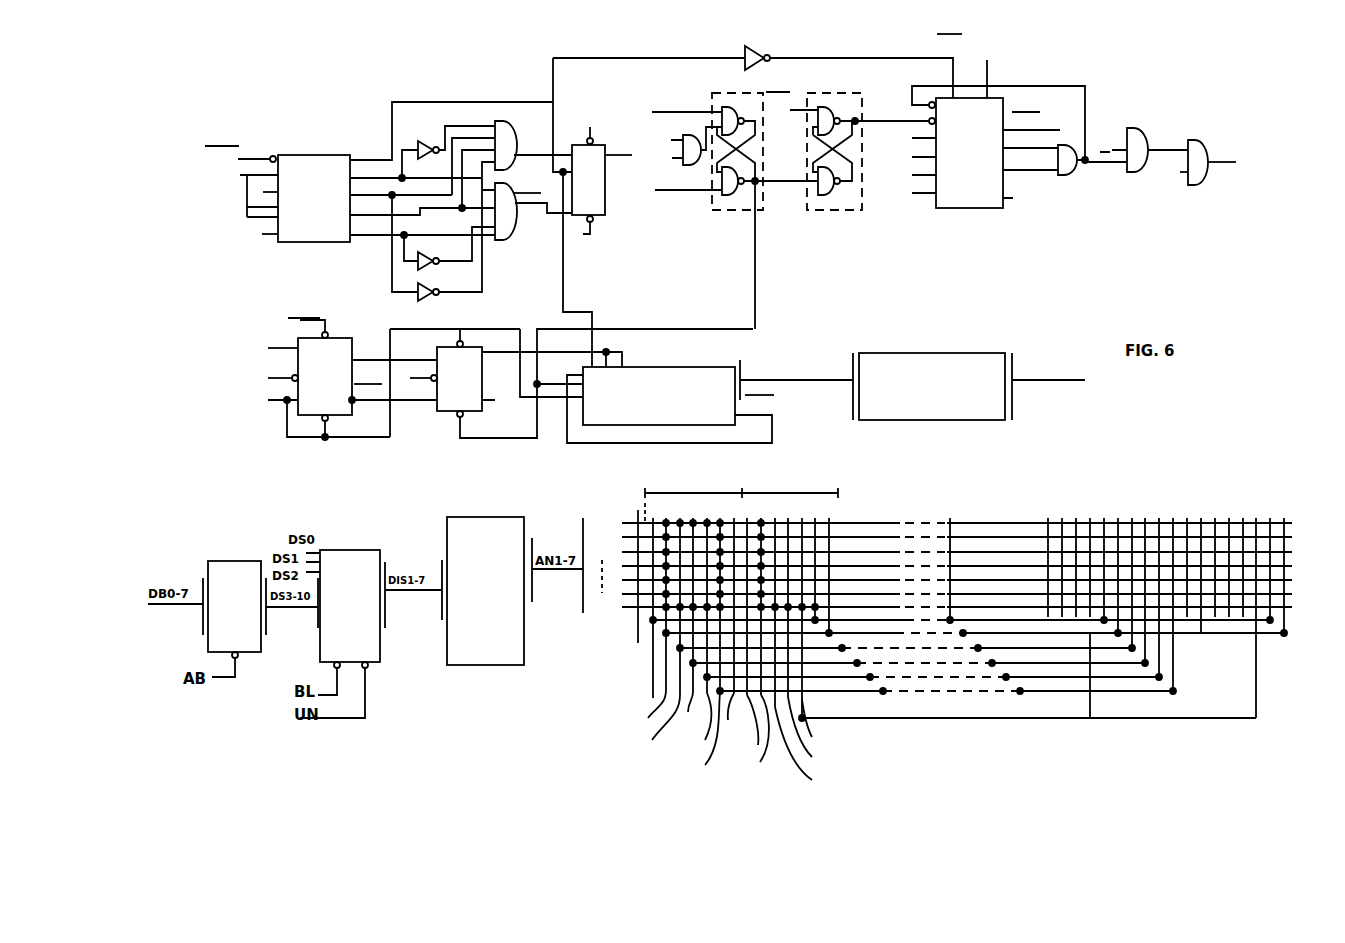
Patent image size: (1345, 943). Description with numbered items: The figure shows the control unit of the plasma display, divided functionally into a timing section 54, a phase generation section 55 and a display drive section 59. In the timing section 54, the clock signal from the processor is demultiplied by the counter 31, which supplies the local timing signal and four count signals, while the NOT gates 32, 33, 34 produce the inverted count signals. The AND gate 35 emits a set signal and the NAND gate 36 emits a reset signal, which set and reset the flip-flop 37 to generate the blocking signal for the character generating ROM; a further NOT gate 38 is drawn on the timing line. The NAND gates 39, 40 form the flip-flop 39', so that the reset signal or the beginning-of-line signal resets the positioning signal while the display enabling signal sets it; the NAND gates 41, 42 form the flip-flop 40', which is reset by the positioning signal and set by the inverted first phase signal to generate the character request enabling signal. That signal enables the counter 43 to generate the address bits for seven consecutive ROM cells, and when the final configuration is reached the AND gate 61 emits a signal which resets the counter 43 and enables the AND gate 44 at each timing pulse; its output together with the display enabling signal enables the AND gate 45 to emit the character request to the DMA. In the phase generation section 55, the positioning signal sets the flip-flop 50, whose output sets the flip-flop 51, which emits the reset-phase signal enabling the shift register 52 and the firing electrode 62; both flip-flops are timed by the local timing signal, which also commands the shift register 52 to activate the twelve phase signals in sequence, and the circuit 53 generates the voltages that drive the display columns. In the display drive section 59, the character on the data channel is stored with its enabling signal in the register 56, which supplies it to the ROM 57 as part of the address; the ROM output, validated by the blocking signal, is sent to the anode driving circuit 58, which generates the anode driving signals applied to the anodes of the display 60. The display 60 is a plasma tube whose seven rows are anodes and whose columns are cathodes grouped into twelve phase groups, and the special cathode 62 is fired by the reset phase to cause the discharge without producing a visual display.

The counter 31 is at (314, 162).
The NOT gate 32 is at (427, 141).
The NOT gate 33 is at (434, 293).
The NOT gate 34 is at (434, 262).
The AND gate 35 is at (504, 130).
The NAND gate 36 is at (506, 233).
The flip-flop 37 is at (606, 197).
The NOT gate 38 is at (740, 65).
The NAND gate 39 is at (755, 100).
The flip-flop 39' is at (752, 165).
The NAND gate 40 is at (733, 202).
The flip-flop 40' is at (850, 165).
The NAND gate 41 is at (822, 210).
The NAND gate 42 is at (825, 111).
The counter 43 is at (972, 208).
The AND gate 44 is at (1133, 128).
The AND gate 45 is at (1193, 140).
The flip-flop 50 is at (338, 346).
The flip-flop 51 is at (445, 414).
The shift register 52 is at (692, 370).
The driving circuit 53 is at (937, 360).
The timing section 54 is at (246, 268).
The phase generation section 55 is at (250, 438).
The register 56 is at (213, 636).
The ROM 57 is at (372, 644).
The anode driving circuit 58 is at (456, 656).
The display drive section 59 is at (596, 492).
The plasma display 60 is at (628, 670).
The AND gate 61 is at (1067, 176).
The special cathode 62 is at (638, 510).